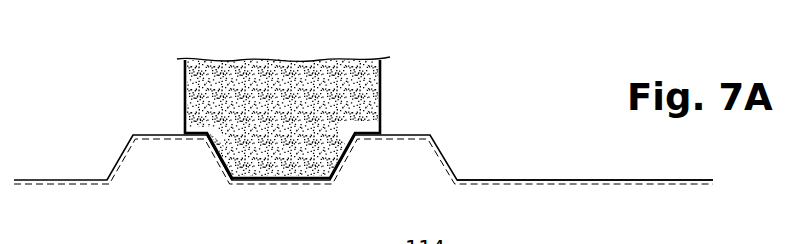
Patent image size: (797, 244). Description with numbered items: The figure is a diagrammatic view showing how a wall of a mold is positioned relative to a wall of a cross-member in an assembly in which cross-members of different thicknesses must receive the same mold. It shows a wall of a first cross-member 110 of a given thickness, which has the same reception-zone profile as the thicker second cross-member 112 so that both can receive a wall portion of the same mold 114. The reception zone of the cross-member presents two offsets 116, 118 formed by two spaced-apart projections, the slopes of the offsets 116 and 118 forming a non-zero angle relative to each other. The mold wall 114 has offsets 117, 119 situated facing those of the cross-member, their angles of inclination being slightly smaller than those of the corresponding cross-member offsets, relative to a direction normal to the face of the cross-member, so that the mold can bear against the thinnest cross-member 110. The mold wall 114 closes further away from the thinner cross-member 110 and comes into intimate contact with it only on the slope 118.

The first cross-member 110 is at (638, 185).
The second cross-member 112 is at (549, 178).
The mold wall 114 is at (380, 78).
The offset 116 is at (352, 157).
The mold offset 117 is at (347, 143).
The offset 118 is at (215, 160).
The mold offset 119 is at (227, 150).